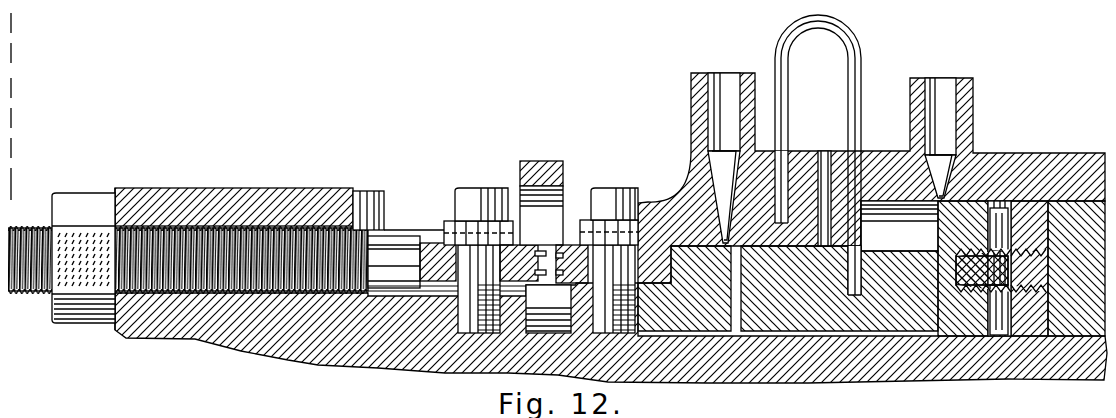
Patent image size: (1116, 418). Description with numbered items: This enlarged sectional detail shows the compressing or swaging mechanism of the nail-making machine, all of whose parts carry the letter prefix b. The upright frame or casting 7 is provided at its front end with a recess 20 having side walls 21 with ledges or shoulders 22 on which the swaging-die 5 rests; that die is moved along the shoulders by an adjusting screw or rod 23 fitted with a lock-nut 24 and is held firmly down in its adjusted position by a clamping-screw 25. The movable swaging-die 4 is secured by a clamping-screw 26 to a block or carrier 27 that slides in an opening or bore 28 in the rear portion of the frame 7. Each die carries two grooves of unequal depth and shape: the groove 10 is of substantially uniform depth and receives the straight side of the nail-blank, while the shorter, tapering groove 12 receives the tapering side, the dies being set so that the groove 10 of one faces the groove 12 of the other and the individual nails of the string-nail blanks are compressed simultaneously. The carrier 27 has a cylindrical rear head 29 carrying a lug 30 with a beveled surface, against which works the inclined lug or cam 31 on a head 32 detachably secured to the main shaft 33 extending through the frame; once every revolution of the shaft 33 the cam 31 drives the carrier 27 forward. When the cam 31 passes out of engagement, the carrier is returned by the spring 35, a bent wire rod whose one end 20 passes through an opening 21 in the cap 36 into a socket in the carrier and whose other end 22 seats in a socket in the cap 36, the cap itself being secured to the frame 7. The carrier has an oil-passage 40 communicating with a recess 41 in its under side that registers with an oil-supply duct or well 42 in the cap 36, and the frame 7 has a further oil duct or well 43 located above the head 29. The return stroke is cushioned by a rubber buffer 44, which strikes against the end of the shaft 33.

The movable swaging-die 4 is at (647, 238).
The swaging-die 5 is at (424, 238).
The upright frame or casting 7 is at (1073, 140).
The groove 10 is at (556, 270).
The groove 12 is at (548, 309).
The recess 20 is at (856, 231).
The opening 21 is at (821, 145).
The spring-rod end 22 is at (773, 110).
The adjusting screw or rod 23 is at (188, 275).
The lock-nut 24 is at (60, 312).
The clamping-screw 25 is at (455, 181).
The clamping-screw 26 is at (612, 190).
The block or carrier 27 is at (662, 310).
The opening or bore 28 is at (873, 203).
The head 29 is at (955, 323).
The lug or projection 30 is at (992, 202).
The lug or projection 31 is at (993, 382).
The head 32 is at (1023, 202).
The shaft 33 is at (1058, 323).
The spring 35 is at (814, 22).
The cap 36 is at (806, 143).
The oil-passage 40 is at (727, 308).
The recess 41 is at (807, 327).
The oil-supply duct or well 42 is at (712, 93).
The oil duct or well 43 is at (938, 94).
The buffer 44 is at (930, 238).
The cap b is at (539, 153).